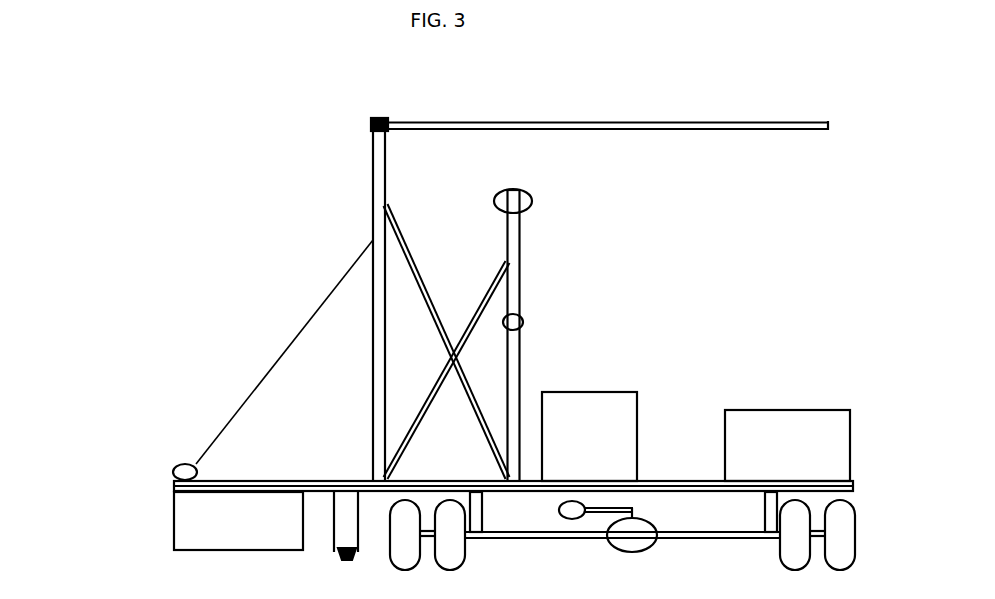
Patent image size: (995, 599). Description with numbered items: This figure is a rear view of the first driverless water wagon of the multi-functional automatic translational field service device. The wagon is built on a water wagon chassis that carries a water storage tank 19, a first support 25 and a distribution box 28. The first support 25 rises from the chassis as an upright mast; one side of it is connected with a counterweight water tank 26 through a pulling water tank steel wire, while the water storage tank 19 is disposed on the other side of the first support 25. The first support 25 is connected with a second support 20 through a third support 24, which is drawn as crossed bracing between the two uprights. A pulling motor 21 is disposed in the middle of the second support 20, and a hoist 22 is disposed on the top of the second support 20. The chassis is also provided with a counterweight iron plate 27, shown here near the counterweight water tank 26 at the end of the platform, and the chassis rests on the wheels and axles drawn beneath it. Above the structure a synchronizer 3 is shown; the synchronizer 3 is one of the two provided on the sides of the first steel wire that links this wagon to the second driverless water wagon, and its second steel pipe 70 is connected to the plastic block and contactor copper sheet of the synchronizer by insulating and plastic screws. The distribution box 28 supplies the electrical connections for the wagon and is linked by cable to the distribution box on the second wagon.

The synchronizer 3 is at (800, 122).
The first support 25 is at (372, 202).
The second support 20 is at (521, 256).
The hoist 22 is at (533, 200).
The pulling motor 21 is at (523, 320).
The third support 24 is at (415, 298).
The second steel pipe 70 is at (263, 370).
The counterweight iron plate 27 is at (176, 484).
The counterweight water tank 26 is at (173, 518).
The distribution box 28 is at (638, 393).
The water storage tank 19 is at (757, 409).